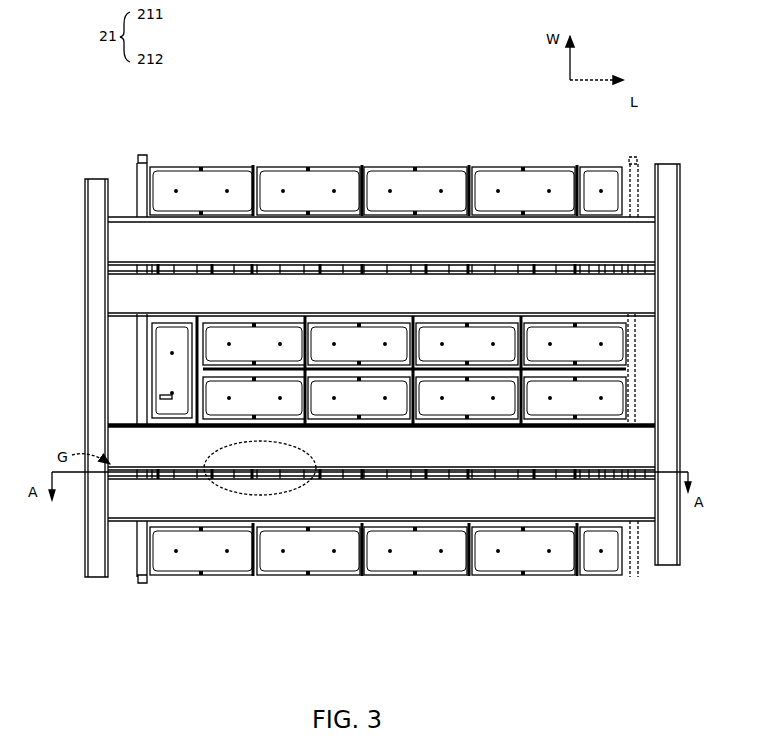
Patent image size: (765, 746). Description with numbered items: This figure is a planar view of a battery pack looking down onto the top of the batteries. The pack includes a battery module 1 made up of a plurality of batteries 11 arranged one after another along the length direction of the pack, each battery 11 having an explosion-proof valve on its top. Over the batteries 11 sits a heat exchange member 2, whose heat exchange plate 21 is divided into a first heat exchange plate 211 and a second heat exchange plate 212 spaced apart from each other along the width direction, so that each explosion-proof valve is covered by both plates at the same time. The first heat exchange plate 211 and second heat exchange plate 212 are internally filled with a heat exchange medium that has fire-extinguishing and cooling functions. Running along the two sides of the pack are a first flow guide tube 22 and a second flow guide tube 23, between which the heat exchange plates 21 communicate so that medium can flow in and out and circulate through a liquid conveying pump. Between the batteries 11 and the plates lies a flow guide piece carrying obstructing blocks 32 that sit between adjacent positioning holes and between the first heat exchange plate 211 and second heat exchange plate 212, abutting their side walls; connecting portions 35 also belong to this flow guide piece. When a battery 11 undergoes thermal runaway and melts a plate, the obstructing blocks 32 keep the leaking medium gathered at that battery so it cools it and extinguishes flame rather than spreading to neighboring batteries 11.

The battery module 1 is at (155, 138).
The heat exchange member 2 is at (72, 590).
The battery 11 is at (178, 162).
The heat exchange plate 21 is at (344, 369).
The first heat exchange plate 211 is at (100, 284).
The second heat exchange plate 212 is at (130, 225).
The first flow guide tube 22 is at (85, 430).
The second flow guide tube 23 is at (680, 410).
The obstructing block 32 is at (470, 276).
The connecting portion 35 is at (448, 276).